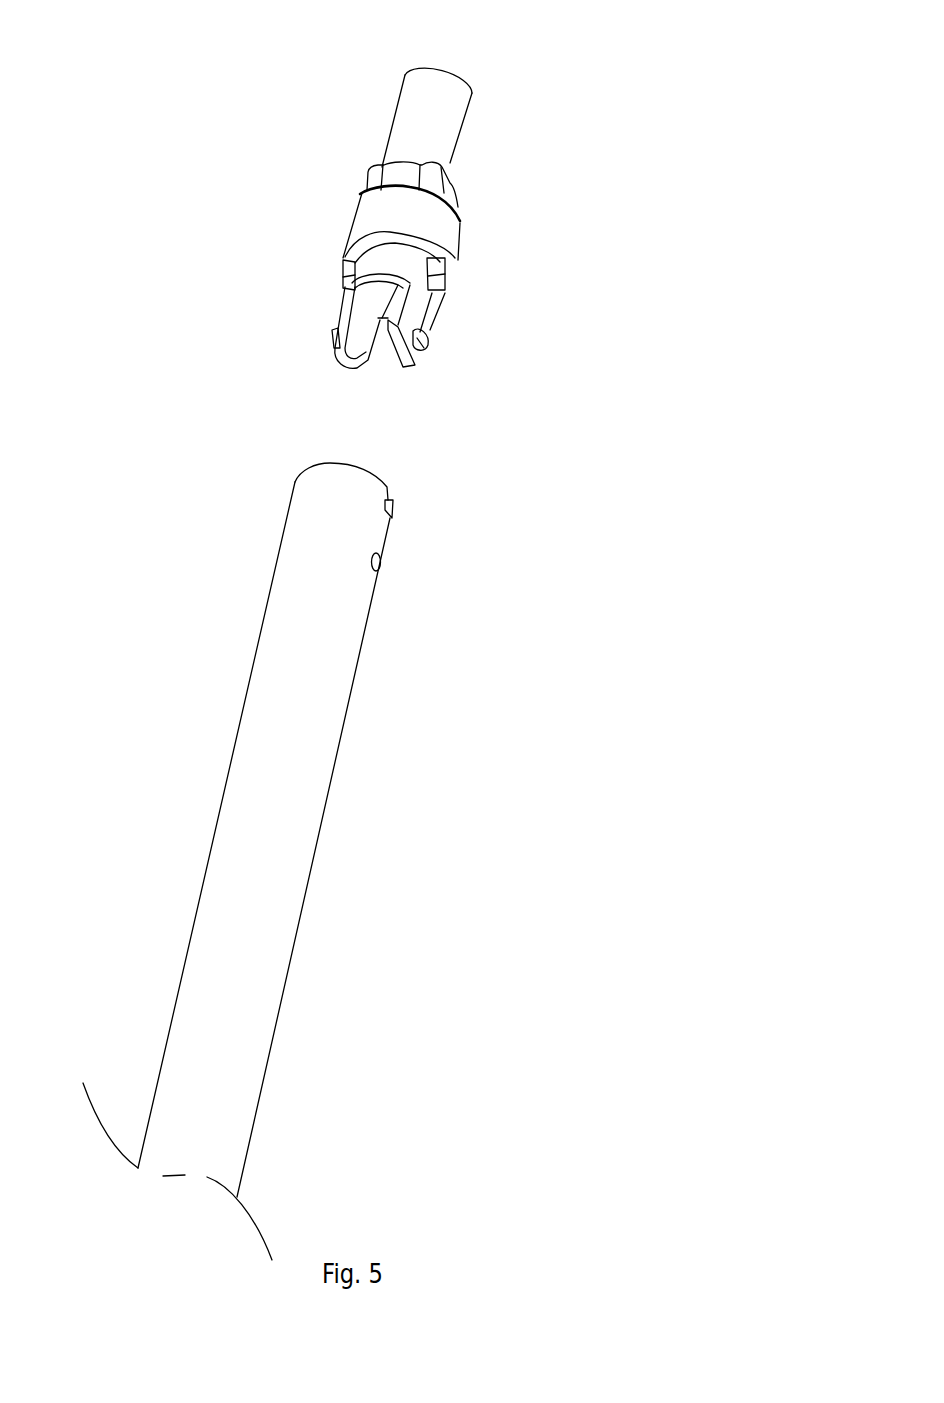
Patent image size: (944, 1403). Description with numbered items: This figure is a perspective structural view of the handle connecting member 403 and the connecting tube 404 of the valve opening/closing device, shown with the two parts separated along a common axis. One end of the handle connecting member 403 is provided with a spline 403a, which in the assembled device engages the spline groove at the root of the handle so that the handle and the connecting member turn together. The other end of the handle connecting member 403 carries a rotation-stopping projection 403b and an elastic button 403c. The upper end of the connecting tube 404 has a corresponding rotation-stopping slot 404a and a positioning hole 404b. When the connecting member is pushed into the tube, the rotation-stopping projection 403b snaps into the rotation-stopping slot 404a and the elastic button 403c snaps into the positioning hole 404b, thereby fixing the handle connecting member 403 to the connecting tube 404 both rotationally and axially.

The handle connecting member 403 is at (415, 232).
The spline 403a is at (367, 190).
The rotation-stopping projection 403b is at (440, 282).
The elastic button 403c is at (422, 342).
The connecting tube 404 is at (252, 1012).
The rotation-stopping slot 404a is at (388, 510).
The positioning hole 404b is at (378, 565).